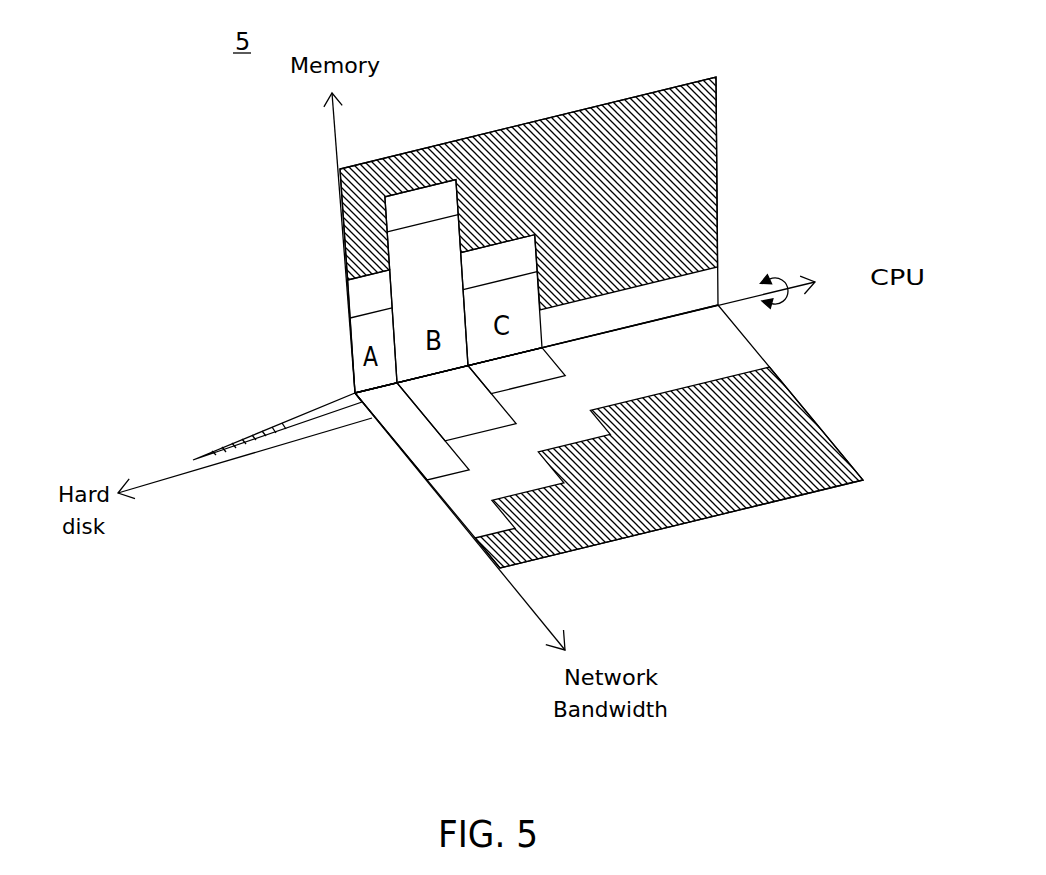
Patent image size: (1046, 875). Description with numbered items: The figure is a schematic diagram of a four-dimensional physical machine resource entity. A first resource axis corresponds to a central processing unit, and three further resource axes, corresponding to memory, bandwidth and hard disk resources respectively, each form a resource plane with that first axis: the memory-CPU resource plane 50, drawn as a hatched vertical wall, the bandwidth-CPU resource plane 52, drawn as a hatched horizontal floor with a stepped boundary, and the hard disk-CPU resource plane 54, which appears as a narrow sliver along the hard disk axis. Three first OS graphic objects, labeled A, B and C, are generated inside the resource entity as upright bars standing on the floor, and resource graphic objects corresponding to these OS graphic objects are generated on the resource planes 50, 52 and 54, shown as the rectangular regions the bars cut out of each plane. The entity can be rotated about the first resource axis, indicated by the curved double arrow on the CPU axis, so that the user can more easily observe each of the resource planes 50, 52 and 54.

The resource plane 50 is at (707, 207).
The resource plane 52 is at (827, 477).
The resource plane 54 is at (221, 447).